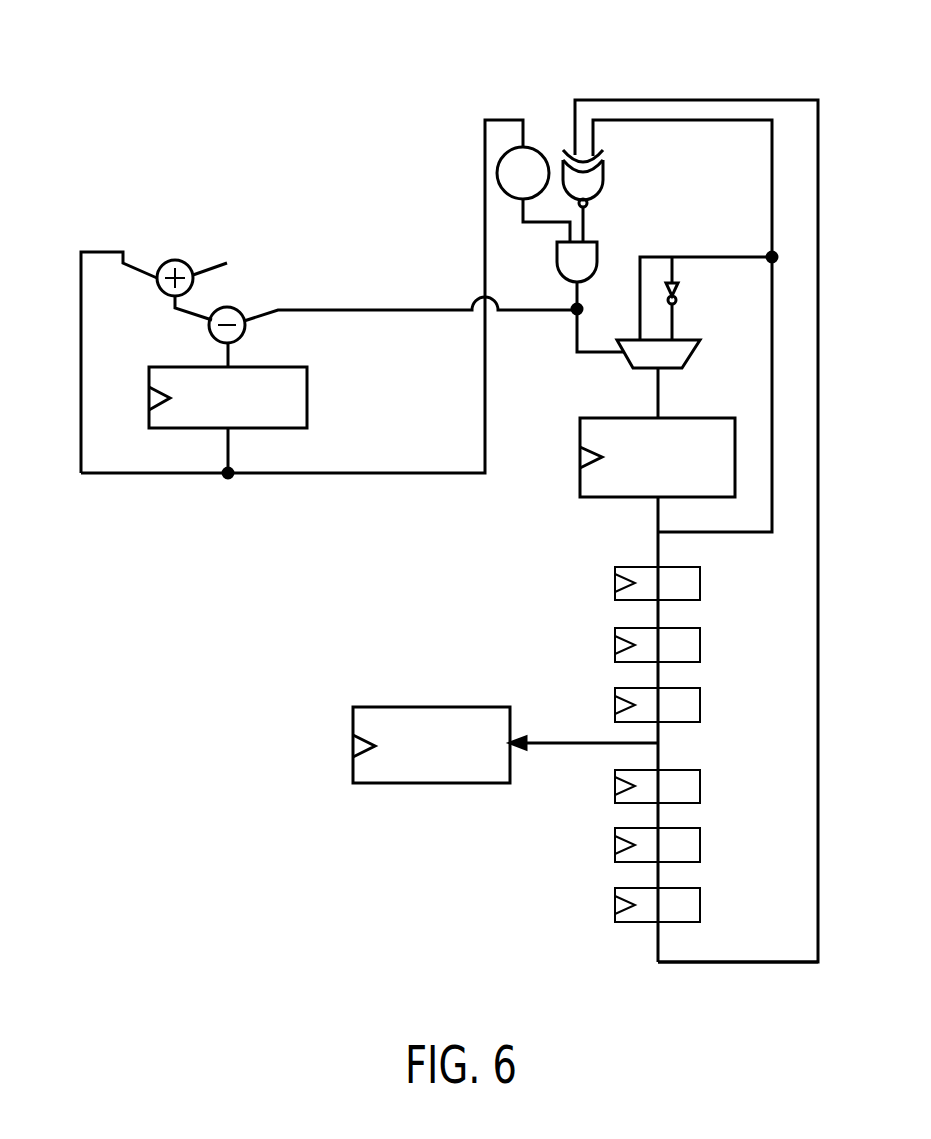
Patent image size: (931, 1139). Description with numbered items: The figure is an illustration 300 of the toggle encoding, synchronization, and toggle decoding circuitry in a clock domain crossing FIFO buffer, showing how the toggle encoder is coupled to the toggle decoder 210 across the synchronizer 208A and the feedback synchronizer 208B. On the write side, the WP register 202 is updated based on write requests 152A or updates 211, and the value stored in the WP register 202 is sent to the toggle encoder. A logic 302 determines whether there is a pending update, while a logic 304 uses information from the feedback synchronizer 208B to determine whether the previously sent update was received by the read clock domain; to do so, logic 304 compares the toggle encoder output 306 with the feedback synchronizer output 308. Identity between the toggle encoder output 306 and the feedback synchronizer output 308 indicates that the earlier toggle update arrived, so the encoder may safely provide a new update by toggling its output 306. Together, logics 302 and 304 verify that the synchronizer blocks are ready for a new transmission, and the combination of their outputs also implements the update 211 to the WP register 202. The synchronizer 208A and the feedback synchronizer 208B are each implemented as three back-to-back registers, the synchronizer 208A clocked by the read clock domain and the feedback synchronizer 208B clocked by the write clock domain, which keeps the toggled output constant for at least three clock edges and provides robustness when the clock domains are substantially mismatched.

The illustration 300 is at (163, 56).
The write requests 152A is at (208, 266).
The updates 211 is at (263, 311).
The WP register 202 is at (192, 429).
The logic 302 is at (537, 144).
The logic 304 is at (613, 182).
The toggle decoder 210 is at (630, 417).
The toggle encoder output 306 is at (657, 514).
The synchronizer 208A is at (707, 557).
The feedback synchronizer 208B is at (707, 757).
The feedback synchronizer output 308 is at (723, 963).